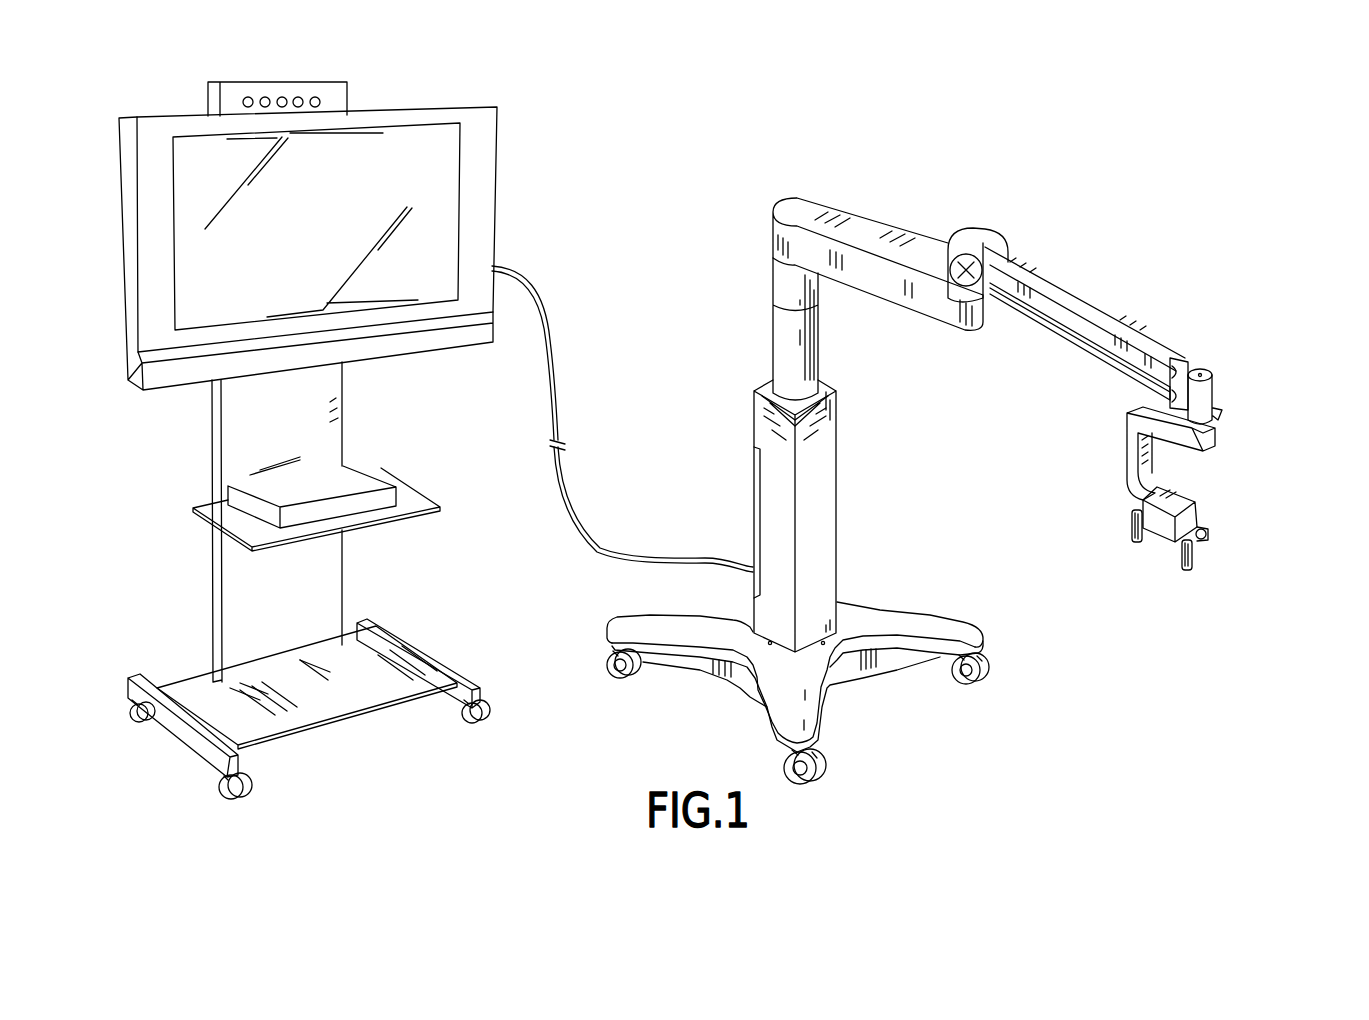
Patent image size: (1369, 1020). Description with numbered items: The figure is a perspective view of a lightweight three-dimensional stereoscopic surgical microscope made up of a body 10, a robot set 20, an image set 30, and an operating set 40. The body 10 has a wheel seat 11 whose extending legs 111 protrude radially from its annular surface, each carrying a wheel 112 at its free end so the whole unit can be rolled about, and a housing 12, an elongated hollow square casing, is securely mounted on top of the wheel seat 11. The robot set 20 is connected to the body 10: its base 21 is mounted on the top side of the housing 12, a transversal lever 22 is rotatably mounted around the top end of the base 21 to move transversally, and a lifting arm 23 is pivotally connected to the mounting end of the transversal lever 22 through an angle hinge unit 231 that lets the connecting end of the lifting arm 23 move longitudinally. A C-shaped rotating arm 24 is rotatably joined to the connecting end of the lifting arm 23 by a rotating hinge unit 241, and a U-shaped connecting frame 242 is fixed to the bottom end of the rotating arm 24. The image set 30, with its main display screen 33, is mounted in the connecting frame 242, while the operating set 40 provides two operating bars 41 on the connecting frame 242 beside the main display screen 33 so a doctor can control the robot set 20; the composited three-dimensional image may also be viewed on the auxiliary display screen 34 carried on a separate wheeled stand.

The body 10 is at (705, 479).
The wheel seat 11 is at (838, 670).
The extending legs 111 is at (785, 713).
The wheels 112 is at (988, 664).
The housing 12 is at (853, 457).
The robot set 20 is at (1054, 224).
The base 21 is at (782, 338).
The transversal lever 22 is at (850, 228).
The lifting arm 23 is at (1117, 300).
The angle hinge unit 231 is at (953, 282).
The rotating arm 24 is at (1106, 456).
The rotating hinge unit 241 is at (1200, 372).
The connecting frame 242 is at (1200, 514).
The image set 30 is at (1217, 486).
The main display screen 33 is at (1167, 533).
The auxiliary display screen 34 is at (483, 187).
The operating set 40 is at (1187, 588).
The operating bars 41 is at (1130, 530).